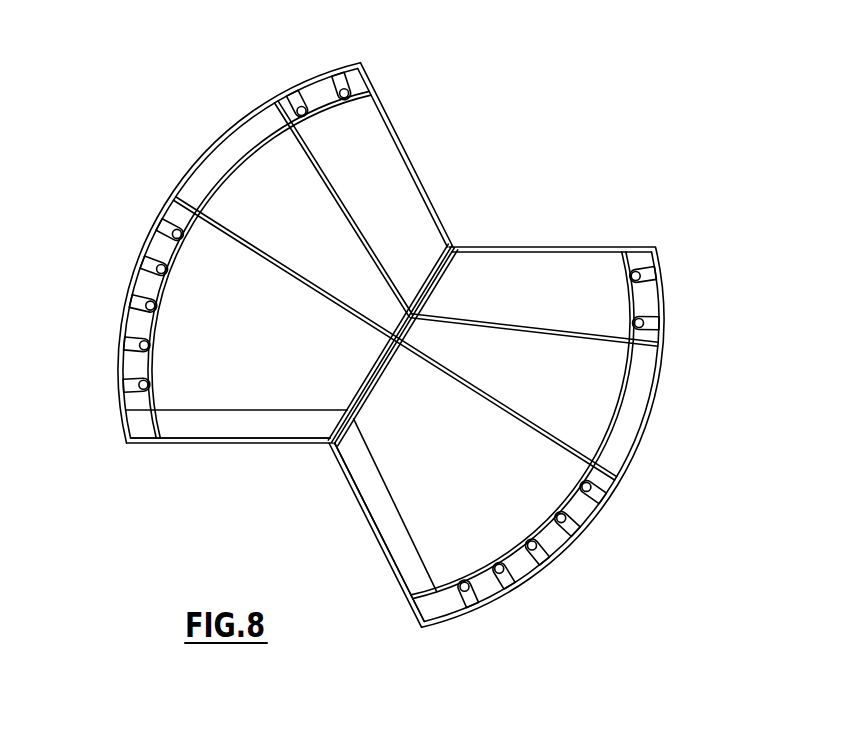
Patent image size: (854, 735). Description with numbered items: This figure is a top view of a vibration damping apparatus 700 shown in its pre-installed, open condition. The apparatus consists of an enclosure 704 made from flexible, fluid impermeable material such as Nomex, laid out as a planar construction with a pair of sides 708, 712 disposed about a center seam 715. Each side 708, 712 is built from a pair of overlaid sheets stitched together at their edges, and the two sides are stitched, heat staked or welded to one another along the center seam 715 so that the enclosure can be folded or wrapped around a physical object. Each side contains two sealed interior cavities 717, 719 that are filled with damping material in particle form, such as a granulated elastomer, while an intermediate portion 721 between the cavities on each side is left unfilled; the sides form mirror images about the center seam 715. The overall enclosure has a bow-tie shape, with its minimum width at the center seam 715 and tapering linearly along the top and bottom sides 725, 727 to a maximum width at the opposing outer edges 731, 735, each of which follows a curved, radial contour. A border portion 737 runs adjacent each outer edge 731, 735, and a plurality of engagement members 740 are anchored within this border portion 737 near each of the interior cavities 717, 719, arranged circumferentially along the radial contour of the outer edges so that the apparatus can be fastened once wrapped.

The vibration damping apparatus 700 is at (547, 49).
The enclosure 704 is at (582, 265).
The side 708 is at (230, 281).
The side 712 is at (442, 515).
The center seam 715 is at (363, 402).
The interior cavity 717 is at (388, 177).
The interior cavity 719 is at (257, 372).
The intermediate portion 721 is at (268, 195).
The top side 725 is at (430, 187).
The bottom side 727 is at (263, 443).
The outer edge 731 is at (188, 177).
The outer edge 735 is at (462, 617).
The border portion 737 is at (257, 133).
The engagement member 740 is at (340, 82).